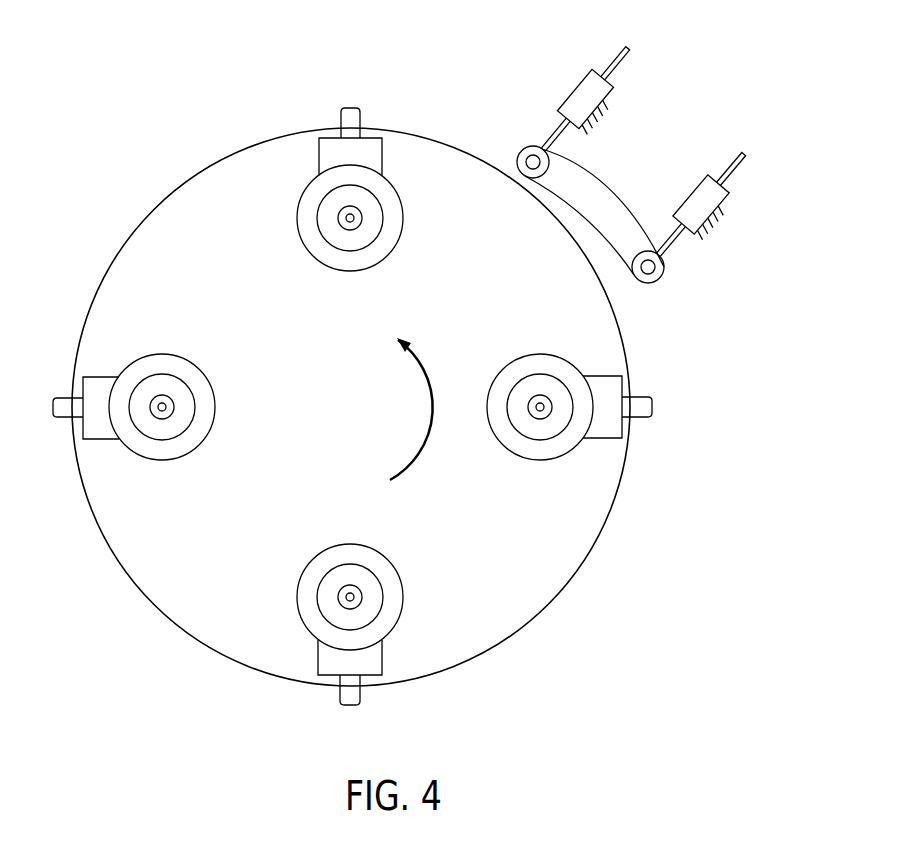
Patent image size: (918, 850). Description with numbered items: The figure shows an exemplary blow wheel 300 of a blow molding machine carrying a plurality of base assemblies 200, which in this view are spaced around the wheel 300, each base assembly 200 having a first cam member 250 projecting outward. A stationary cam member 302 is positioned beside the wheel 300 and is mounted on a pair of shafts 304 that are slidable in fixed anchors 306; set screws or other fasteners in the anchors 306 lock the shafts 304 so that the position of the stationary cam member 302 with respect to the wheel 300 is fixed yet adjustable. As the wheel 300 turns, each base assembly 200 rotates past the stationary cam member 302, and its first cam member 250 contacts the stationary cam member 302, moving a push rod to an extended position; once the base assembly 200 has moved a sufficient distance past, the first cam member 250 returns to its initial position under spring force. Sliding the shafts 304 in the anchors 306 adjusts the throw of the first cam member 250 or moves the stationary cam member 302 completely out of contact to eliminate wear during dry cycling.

The base assembly 200 is at (395, 187).
The first cam member 250 is at (352, 120).
The blow wheel 300 is at (562, 573).
The stationary cam member 302 is at (615, 188).
The shaft 304 is at (612, 60).
The anchor 306 is at (582, 98).